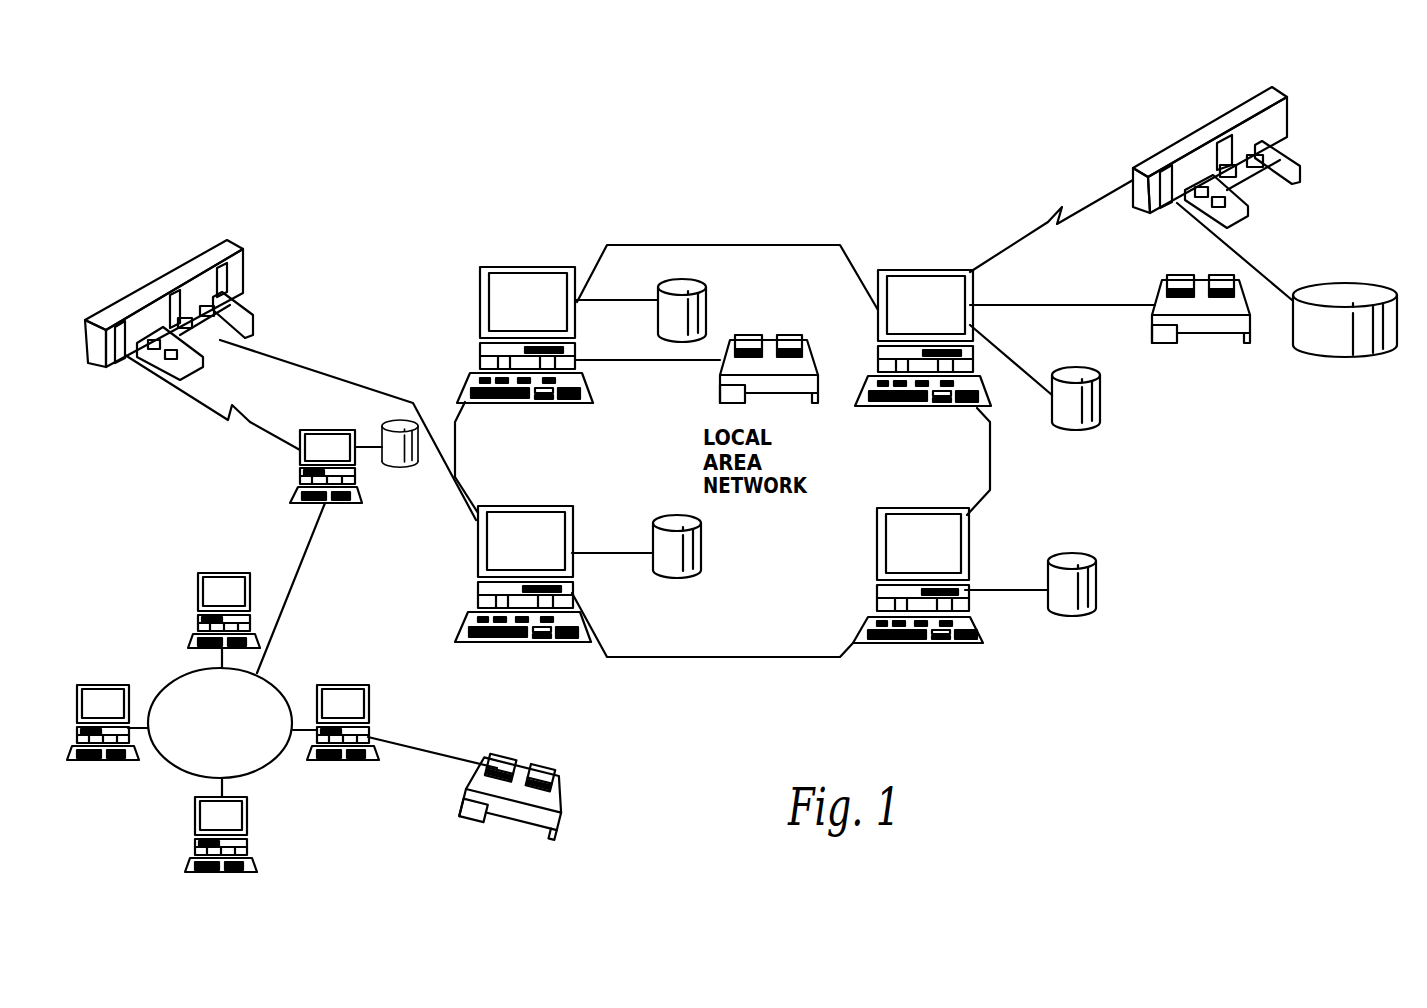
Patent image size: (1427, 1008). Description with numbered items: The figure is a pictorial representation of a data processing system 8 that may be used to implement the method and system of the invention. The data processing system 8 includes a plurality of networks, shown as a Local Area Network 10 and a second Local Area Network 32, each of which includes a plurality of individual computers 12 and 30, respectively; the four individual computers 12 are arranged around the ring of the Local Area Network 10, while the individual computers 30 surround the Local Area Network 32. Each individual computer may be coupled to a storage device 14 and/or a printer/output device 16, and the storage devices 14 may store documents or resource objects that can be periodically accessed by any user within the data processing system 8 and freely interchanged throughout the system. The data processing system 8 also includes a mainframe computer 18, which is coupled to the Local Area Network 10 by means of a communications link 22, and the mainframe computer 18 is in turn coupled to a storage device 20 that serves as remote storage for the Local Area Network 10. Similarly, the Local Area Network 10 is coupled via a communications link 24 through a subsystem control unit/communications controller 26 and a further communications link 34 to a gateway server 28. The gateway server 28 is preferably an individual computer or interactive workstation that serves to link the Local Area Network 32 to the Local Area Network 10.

The data processing system 8 is at (760, 204).
The Local Area Network 10 is at (750, 656).
The individual computer 12 is at (547, 267).
The storage device 14 is at (707, 297).
The printer/output device 16 is at (770, 342).
The mainframe computer 18 is at (1212, 127).
The storage device 20 is at (1370, 290).
The communications link 22 is at (1090, 197).
The communications link 24 is at (333, 377).
The subsystem control unit/communications controller 26 is at (238, 250).
The gateway server 28 is at (325, 430).
The individual computer 30 is at (233, 573).
The Local Area Network 32 is at (175, 768).
The communications link 34 is at (250, 425).